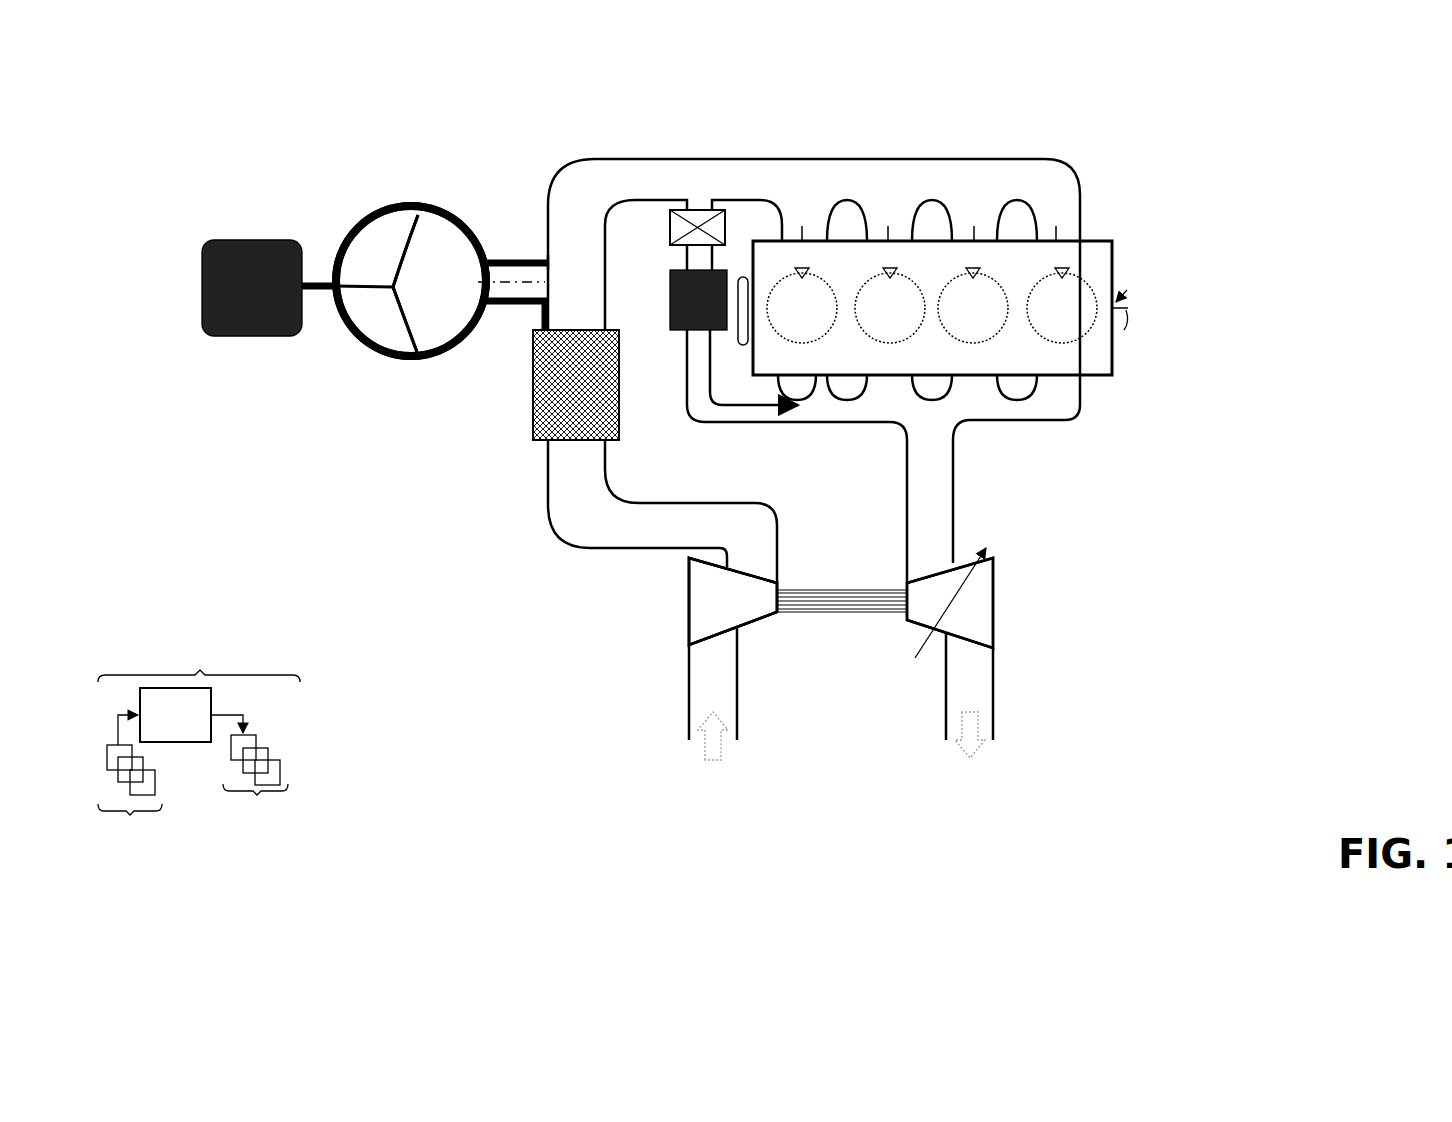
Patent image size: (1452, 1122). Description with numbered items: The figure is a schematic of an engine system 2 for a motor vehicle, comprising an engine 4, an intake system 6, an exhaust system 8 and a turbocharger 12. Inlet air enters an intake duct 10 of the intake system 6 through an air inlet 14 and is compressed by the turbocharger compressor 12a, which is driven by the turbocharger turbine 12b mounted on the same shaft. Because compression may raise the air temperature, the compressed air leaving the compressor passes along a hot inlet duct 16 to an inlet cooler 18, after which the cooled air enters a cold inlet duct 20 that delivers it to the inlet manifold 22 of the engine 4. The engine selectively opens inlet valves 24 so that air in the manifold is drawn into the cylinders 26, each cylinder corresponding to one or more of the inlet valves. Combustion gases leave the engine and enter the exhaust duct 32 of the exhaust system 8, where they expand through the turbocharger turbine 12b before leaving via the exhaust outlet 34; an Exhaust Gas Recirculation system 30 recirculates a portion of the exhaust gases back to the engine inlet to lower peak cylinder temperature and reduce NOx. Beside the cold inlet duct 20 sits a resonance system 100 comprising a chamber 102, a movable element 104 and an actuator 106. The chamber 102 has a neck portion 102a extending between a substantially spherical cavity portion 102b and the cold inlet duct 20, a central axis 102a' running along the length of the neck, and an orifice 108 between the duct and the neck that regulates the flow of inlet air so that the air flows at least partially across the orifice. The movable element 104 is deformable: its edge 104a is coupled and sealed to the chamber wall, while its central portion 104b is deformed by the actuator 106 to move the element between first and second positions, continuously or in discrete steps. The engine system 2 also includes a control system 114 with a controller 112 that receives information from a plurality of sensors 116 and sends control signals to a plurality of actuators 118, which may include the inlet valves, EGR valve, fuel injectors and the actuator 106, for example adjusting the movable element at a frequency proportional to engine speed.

The engine system 2 is at (518, 95).
The engine 4 is at (1030, 95).
The intake system 6 is at (552, 623).
The exhaust system 8 is at (1118, 490).
The intake duct 10 is at (689, 661).
The turbocharger 12 is at (832, 640).
The turbocharger compressor 12a is at (750, 625).
The turbocharger turbine 12b is at (918, 628).
The air inlet 14 is at (690, 740).
The hot inlet duct 16 is at (595, 549).
The inlet cooler 18 is at (531, 422).
The cold inlet duct 20 is at (638, 157).
The inlet manifold 22 is at (900, 157).
The inlet valves 24 is at (902, 230).
The cylinders 26 is at (838, 361).
The Exhaust Gas Recirculation (EGR) system 30 is at (797, 437).
The exhaust duct 32 is at (955, 502).
The exhaust outlet 34 is at (995, 715).
The resonance system 100 is at (312, 442).
The chamber 102 is at (383, 208).
The neck portion 102a is at (513, 236).
The central axis 102a' is at (511, 316).
The cavity portion 102b is at (437, 245).
The movable element 104 is at (440, 355).
The edge 104a is at (415, 352).
The central portion 104b is at (396, 289).
The actuator 106 is at (266, 243).
The orifice 108 is at (550, 266).
The controller 112 is at (180, 716).
The control system 114 is at (199, 646).
The sensors 116 is at (134, 803).
The actuators 118 is at (263, 793).